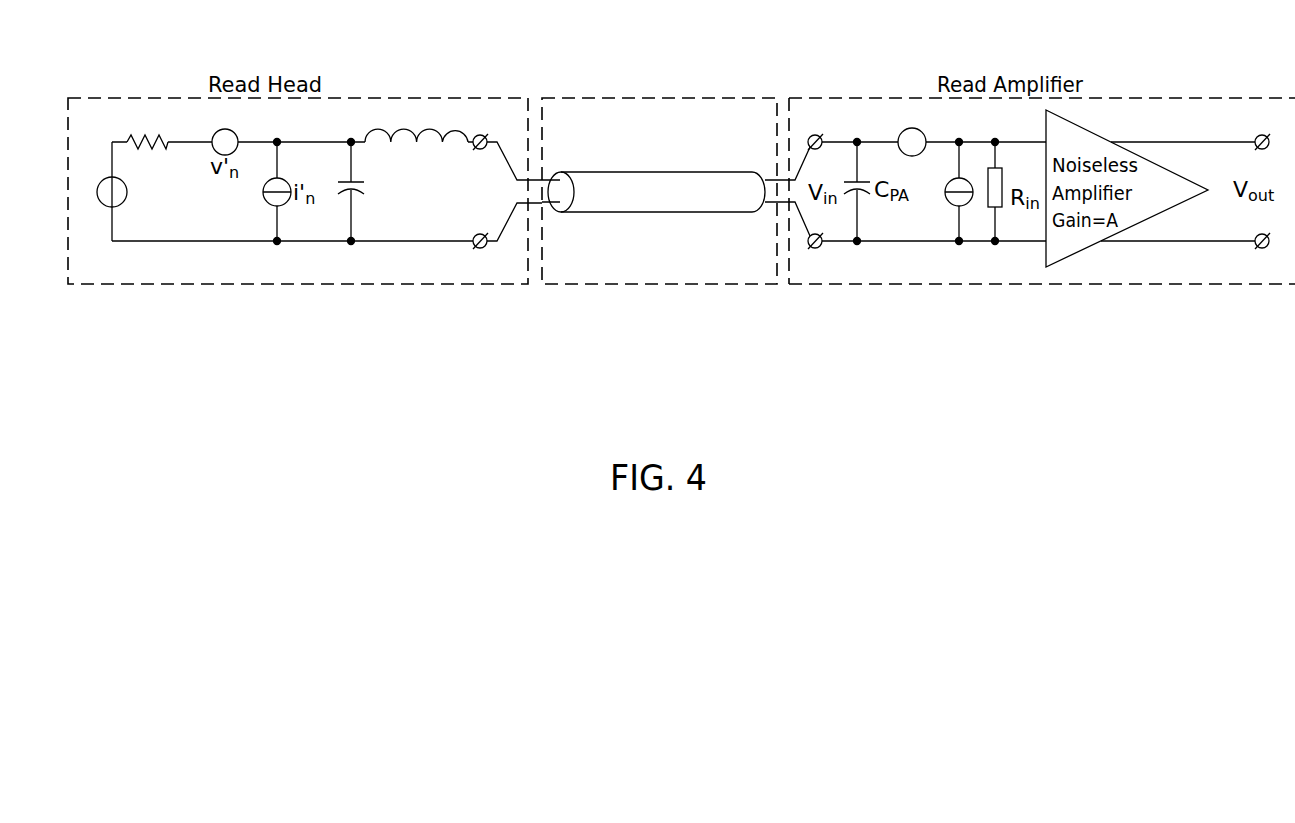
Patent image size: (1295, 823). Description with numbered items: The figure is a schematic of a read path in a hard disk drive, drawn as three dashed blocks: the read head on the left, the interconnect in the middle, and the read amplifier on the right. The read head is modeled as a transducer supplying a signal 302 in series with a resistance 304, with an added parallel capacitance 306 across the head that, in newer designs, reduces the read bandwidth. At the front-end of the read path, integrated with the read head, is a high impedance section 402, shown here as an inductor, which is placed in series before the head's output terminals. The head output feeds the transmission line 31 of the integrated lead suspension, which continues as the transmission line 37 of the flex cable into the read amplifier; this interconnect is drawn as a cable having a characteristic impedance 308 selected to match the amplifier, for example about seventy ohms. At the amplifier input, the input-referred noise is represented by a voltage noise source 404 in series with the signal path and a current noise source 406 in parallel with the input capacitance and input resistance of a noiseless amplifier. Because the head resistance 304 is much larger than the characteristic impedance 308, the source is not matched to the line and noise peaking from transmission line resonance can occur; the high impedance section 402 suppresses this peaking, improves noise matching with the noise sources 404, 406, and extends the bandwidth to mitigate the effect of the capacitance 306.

The signal 302 is at (100, 178).
The resistance 304 is at (133, 134).
The parallel capacitance 306 is at (340, 182).
The high impedance section 402 is at (453, 127).
The transmission line 31 is at (692, 90).
The transmission line 37 is at (777, 90).
The characteristic impedance 308 is at (652, 146).
The voltage noise source 404 is at (900, 131).
The current noise source 406 is at (949, 182).